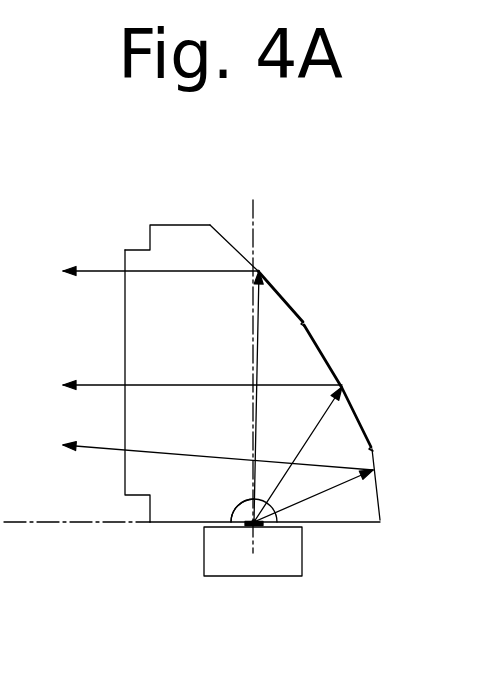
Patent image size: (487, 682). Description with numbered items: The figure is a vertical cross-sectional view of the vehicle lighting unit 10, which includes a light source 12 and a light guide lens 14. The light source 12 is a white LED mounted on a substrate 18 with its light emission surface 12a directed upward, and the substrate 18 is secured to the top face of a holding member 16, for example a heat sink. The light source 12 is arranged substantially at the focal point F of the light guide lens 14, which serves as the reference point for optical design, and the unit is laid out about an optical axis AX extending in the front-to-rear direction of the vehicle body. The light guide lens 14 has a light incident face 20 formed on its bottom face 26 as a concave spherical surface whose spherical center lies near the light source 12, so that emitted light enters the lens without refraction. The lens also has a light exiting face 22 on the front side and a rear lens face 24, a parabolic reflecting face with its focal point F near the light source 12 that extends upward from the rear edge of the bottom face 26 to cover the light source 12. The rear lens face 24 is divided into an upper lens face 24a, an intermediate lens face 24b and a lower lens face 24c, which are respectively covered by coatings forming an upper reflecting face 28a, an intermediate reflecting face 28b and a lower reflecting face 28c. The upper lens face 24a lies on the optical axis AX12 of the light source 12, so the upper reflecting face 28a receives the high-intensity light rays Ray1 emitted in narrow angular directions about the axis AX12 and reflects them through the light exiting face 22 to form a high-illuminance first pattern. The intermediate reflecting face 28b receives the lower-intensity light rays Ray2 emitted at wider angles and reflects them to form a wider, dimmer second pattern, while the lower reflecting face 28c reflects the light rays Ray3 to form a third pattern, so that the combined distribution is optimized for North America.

The vehicle lighting unit 10 is at (120, 238).
The light source 12 is at (265, 503).
The light emission surface 12a is at (247, 500).
The light guide lens 14 is at (167, 225).
The holding member 16 is at (273, 567).
The substrate 18 is at (245, 525).
The light incident face 20 is at (262, 516).
The light exiting face 22 is at (125, 342).
The rear lens face 24 is at (366, 361).
The upper lens face 24a is at (290, 311).
The intermediate lens face 24b is at (317, 342).
The lower lens face 24c is at (372, 484).
The bottom face 26 is at (345, 523).
The upper reflecting face 28a is at (290, 307).
The intermediate reflecting face 28b is at (352, 407).
The lower reflecting face 28c is at (429, 506).
The optical axis AX is at (30, 520).
The optical axis of the light source AX12 is at (252, 238).
The focal point F is at (232, 500).
The light rays Ray1 is at (257, 312).
The light rays Ray2 is at (318, 420).
The light rays Ray3 is at (362, 522).